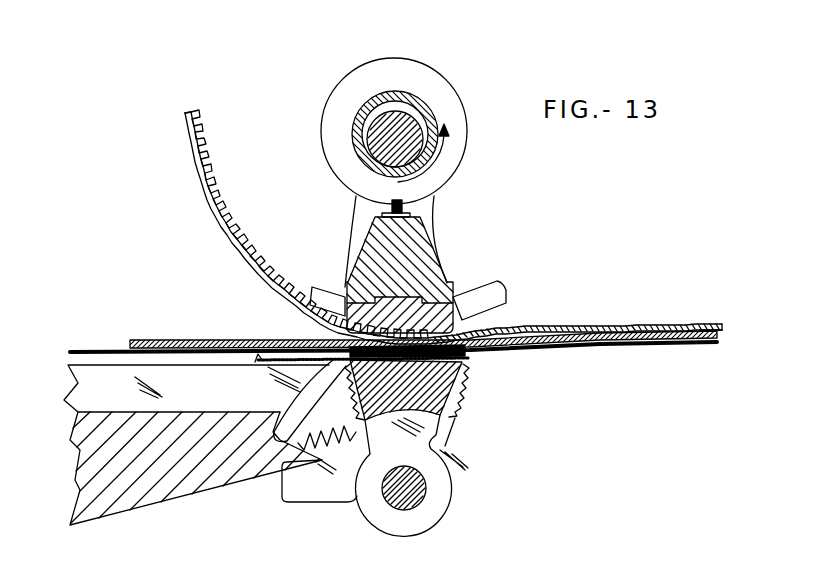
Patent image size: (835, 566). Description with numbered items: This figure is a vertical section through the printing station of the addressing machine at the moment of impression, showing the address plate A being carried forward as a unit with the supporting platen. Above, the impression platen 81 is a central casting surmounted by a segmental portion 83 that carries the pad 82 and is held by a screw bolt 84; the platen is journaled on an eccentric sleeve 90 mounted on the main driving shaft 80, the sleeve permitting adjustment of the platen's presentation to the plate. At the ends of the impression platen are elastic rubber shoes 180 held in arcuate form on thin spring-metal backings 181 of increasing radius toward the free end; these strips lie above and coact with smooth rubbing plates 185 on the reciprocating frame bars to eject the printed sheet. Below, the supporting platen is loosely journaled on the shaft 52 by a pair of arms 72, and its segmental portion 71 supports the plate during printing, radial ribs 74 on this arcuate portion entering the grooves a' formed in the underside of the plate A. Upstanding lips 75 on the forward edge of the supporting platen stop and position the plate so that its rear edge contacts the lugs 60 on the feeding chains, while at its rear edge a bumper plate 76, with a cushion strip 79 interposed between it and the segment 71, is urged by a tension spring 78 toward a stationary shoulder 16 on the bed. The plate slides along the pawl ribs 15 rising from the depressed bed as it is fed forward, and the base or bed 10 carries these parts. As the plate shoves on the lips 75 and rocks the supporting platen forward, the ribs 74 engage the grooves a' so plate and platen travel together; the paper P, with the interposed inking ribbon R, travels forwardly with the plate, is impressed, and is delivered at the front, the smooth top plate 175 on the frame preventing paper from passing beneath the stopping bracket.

The base 10 is at (163, 490).
The pawl ribs 15 is at (196, 388).
The stationary shoulder 16 is at (282, 477).
The shaft 52 is at (430, 485).
The upstanding lugs 60 is at (255, 362).
The segmental portion 71 is at (447, 400).
The arms 72 is at (450, 444).
The radial ribs 74 is at (458, 393).
The upstanding lips 75 is at (470, 368).
The bumper plate 76 is at (347, 408).
The tension spring 78 is at (340, 441).
The cushion strip 79 is at (347, 390).
The main driving shaft 80 is at (412, 128).
The impression platen 81 is at (452, 230).
The pad 82 is at (441, 227).
The segmental portion 83 is at (450, 290).
The screw bolt 84 is at (410, 203).
The eccentric sleeve 90 is at (418, 107).
The smooth top plate 175 is at (724, 332).
The elastic strips or shoes 180 is at (211, 229).
The spring-metal backings 181 is at (201, 176).
The rubbing plates 185 is at (100, 344).
The address plate A is at (465, 352).
The grooves a' is at (487, 372).
The paper P is at (627, 330).
The ribbon R is at (605, 347).